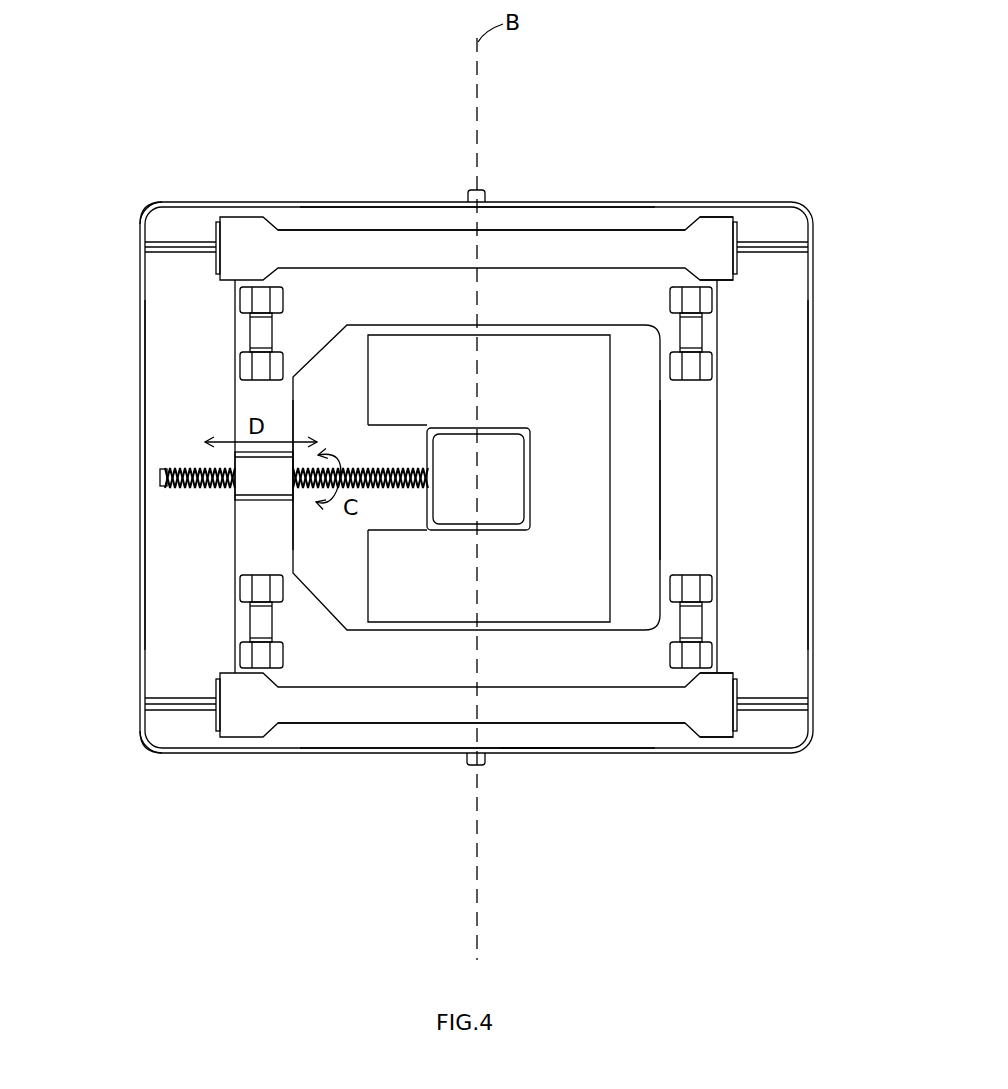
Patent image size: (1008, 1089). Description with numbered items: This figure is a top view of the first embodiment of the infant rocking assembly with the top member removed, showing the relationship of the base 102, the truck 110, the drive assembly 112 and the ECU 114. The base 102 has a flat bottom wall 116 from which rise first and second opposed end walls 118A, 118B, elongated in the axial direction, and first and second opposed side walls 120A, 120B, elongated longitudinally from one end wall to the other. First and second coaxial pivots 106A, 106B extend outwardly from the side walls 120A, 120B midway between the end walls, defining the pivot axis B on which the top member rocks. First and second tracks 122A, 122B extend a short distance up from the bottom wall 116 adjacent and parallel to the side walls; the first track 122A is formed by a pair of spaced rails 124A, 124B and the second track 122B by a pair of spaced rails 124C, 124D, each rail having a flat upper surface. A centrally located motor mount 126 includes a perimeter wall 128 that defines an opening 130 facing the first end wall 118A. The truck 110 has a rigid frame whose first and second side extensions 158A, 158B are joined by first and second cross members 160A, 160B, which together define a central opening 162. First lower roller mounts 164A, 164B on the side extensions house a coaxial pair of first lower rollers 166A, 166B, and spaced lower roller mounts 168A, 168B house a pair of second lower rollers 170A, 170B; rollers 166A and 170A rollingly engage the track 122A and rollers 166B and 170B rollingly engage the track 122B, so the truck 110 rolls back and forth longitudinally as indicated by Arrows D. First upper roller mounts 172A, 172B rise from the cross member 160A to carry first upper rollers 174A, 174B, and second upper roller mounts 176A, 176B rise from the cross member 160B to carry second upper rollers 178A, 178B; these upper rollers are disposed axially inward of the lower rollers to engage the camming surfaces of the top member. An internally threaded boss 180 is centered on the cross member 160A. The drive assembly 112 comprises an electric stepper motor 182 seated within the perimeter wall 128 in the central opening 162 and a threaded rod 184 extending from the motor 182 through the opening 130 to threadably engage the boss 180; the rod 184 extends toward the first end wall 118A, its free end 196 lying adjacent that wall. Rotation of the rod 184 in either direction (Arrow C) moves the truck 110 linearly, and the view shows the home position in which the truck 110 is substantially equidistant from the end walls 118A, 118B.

The base 102 is at (405, 756).
The first coaxial pivot 106A is at (468, 190).
The second coaxial pivot 106B is at (482, 768).
The truck 110 is at (456, 726).
The drive assembly 112 is at (358, 448).
The ECU 114 is at (552, 386).
The bottom wall 116 is at (786, 536).
The first end wall 118A is at (142, 460).
The second end wall 118B is at (812, 452).
The first side wall 120A is at (591, 204).
The second side wall 120B is at (585, 756).
The first track 122A is at (176, 240).
The second track 122B is at (163, 714).
The rail 124A is at (155, 240).
The rail 124B is at (155, 257).
The rail 124C is at (155, 698).
The rail 124D is at (155, 712).
The motor mount 126 is at (519, 530).
The perimeter wall 128 is at (457, 532).
The opening 130 is at (427, 494).
The first side extension 158A is at (382, 247).
The second side extension 158B is at (313, 710).
The first cross member 160A is at (270, 395).
The second cross member 160B is at (700, 420).
The central opening 162 is at (633, 492).
The first lower roller mount 164A is at (244, 225).
The first lower roller mount 164B is at (243, 722).
The first lower roller 166A is at (213, 230).
The first lower roller 166B is at (210, 722).
The lower roller mount 168A is at (707, 240).
The lower roller mount 168B is at (710, 722).
The second lower roller 170A is at (740, 235).
The second lower roller 170B is at (740, 715).
The first upper roller mount 172A is at (246, 300).
The first upper roller mount 172B is at (246, 588).
The first upper roller 174A is at (258, 335).
The first upper roller 174B is at (258, 622).
The second upper roller mount 176A is at (707, 300).
The second upper roller mount 176B is at (707, 590).
The second upper roller 178A is at (692, 333).
The second upper roller 178B is at (692, 625).
The internally threaded boss 180 is at (262, 474).
The stepper motor 182 is at (472, 477).
The threaded rod 184 is at (183, 488).
The free end 196 is at (165, 487).